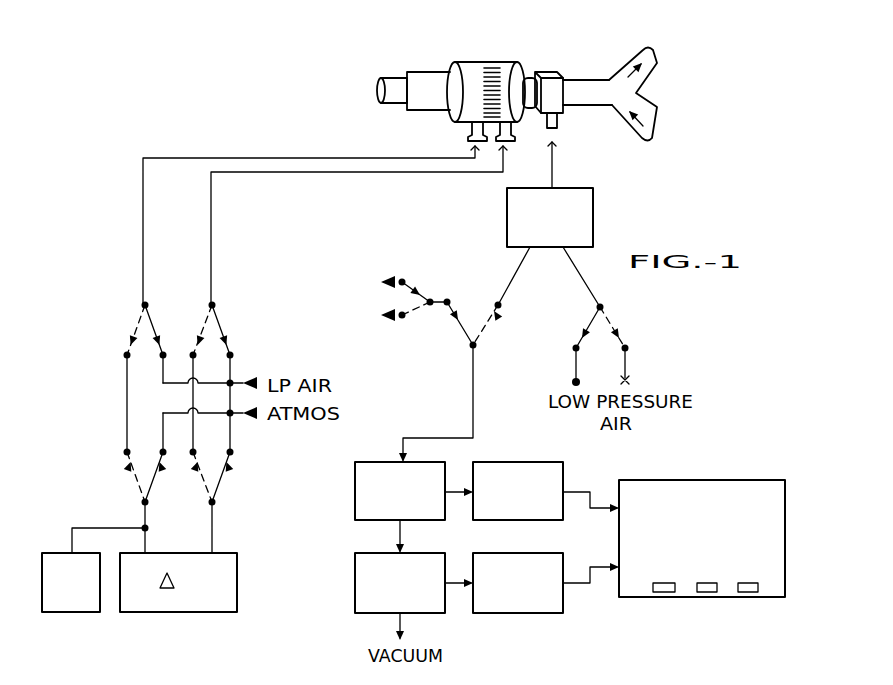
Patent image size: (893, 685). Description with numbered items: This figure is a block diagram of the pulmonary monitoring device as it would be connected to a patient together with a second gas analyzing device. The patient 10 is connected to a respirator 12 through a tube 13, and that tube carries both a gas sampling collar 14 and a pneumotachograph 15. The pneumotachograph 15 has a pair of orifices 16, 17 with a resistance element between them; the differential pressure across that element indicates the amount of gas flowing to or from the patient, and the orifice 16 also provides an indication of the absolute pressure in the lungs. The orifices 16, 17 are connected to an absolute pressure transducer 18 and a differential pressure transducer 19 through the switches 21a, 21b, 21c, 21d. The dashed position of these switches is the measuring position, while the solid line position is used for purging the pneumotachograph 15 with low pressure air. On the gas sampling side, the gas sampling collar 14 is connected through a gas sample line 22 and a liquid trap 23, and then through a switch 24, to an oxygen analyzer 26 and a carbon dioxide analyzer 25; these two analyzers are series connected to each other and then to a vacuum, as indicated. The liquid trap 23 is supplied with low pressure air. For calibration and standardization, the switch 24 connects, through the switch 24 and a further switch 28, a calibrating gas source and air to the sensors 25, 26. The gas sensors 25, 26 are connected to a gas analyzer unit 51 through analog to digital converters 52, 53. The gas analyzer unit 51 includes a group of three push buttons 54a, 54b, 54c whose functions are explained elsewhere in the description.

The patient 10 is at (369, 95).
The respirator 12 is at (689, 94).
The tube 13 is at (595, 80).
The gas sampling collar 14 is at (552, 70).
The pneumotachograph 15 is at (466, 58).
The orifice 16 is at (470, 139).
The orifice 17 is at (510, 139).
The absolute pressure transducer 18 is at (68, 612).
The differential pressure transducer 19 is at (205, 612).
The switch 21a is at (137, 325).
The switch 21b is at (205, 322).
The switch 21c is at (135, 484).
The switch 21d is at (208, 476).
The gas sample line 22 is at (557, 120).
The liquid trap 23 is at (597, 206).
The switch 24 is at (473, 318).
The carbon dioxide analyzer 25 is at (356, 493).
The oxygen analyzer 26 is at (356, 582).
The switch 28 is at (414, 300).
The gas analyzer unit 51 is at (702, 547).
The analog to digital converter 52 is at (550, 513).
The analog to digital converter 53 is at (534, 614).
The push button 54a is at (661, 597).
The push button 54b is at (707, 597).
The push button 54c is at (748, 597).